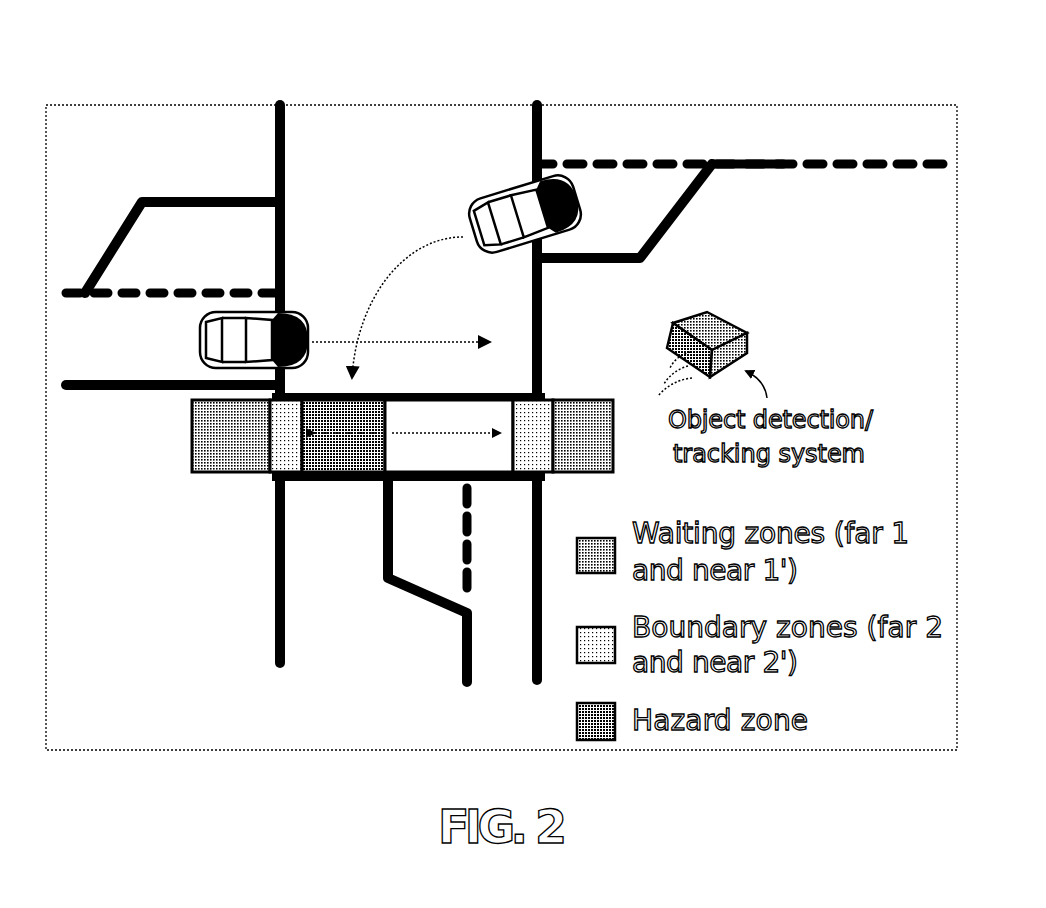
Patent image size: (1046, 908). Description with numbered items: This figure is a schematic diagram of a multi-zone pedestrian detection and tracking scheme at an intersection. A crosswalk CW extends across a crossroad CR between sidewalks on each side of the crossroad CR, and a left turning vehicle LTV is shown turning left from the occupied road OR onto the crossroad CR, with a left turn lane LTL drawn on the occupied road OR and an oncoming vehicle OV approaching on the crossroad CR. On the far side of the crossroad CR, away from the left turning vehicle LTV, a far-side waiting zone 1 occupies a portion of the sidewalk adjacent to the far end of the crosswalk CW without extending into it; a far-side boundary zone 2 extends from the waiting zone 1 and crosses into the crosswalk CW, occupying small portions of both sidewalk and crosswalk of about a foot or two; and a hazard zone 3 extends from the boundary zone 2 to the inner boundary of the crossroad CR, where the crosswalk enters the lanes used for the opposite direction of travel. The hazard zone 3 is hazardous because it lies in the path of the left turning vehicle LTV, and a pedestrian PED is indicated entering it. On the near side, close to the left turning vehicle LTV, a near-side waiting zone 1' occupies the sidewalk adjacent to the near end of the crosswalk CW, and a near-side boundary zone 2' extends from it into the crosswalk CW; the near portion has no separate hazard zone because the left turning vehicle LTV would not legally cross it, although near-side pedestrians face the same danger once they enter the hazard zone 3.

The crossroad CR is at (266, 119).
The left turning vehicle LTV is at (455, 190).
The oncoming vehicle OV is at (316, 300).
The pedestrian / hazard zone PED is at (396, 408).
The occupied road OR is at (806, 178).
The left turn lane LTL is at (702, 213).
The crosswalk CW is at (339, 482).
The far-side waiting zone 1 is at (231, 436).
The far-side boundary zone 2 is at (286, 436).
The hazard zone 3 is at (388, 453).
The near-side boundary zone 2' is at (533, 436).
The near-side waiting zone 1' is at (583, 436).